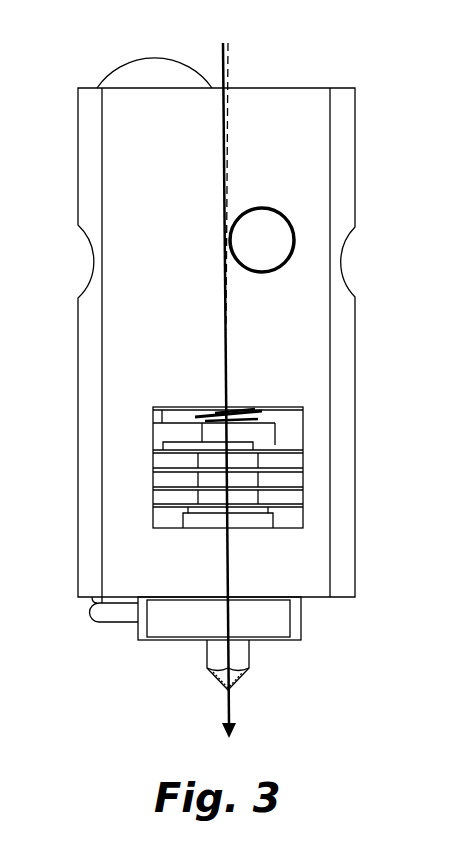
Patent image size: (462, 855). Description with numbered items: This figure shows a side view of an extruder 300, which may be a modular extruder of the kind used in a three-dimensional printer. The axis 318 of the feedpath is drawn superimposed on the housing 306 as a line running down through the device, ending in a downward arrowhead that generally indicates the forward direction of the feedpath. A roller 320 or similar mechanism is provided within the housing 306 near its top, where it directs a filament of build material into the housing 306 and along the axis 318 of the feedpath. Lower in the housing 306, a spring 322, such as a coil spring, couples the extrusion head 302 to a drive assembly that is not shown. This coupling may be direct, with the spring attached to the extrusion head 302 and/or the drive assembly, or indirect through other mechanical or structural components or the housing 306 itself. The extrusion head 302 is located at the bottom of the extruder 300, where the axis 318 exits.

The extruder 300 is at (406, 170).
The extrusion head 302 is at (251, 670).
The housing 306 is at (356, 390).
The axis 318 is at (232, 63).
The roller 320 is at (128, 62).
The spring 322 is at (201, 410).